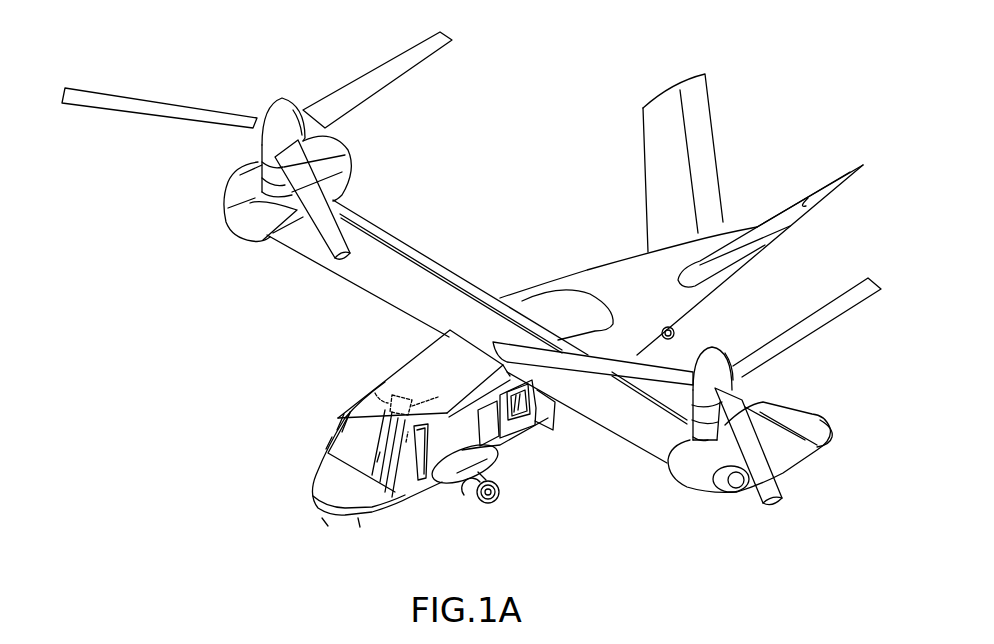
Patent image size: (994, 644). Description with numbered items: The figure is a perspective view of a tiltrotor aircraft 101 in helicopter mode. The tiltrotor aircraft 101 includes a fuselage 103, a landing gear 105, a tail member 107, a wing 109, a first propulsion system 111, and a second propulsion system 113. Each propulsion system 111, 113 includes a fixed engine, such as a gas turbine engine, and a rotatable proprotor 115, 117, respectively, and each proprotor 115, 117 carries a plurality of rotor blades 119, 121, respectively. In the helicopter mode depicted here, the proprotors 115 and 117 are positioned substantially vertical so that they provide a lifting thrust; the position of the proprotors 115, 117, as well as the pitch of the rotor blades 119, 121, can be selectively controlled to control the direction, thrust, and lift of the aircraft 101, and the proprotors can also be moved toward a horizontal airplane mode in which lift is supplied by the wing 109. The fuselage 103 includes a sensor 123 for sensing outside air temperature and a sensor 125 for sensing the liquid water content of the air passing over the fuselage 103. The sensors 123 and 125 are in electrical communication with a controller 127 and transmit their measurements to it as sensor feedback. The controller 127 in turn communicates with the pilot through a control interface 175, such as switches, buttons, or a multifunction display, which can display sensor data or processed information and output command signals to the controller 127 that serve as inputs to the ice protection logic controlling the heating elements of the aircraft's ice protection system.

The tiltrotor aircraft 101 is at (745, 72).
The fuselage 103 is at (360, 517).
The landing gear 105 is at (492, 503).
The tail member 107 is at (713, 127).
The wing 109 is at (604, 428).
The first propulsion system 111 is at (683, 503).
The second propulsion system 113 is at (226, 142).
The rotatable proprotor 115 is at (735, 378).
The rotatable proprotor 117 is at (281, 99).
The rotor blades 119 is at (860, 304).
The rotor blades 121 is at (368, 72).
The sensor 123 is at (372, 385).
The sensor 125 is at (406, 442).
The controller 127 is at (425, 405).
The control interface 175 is at (440, 397).